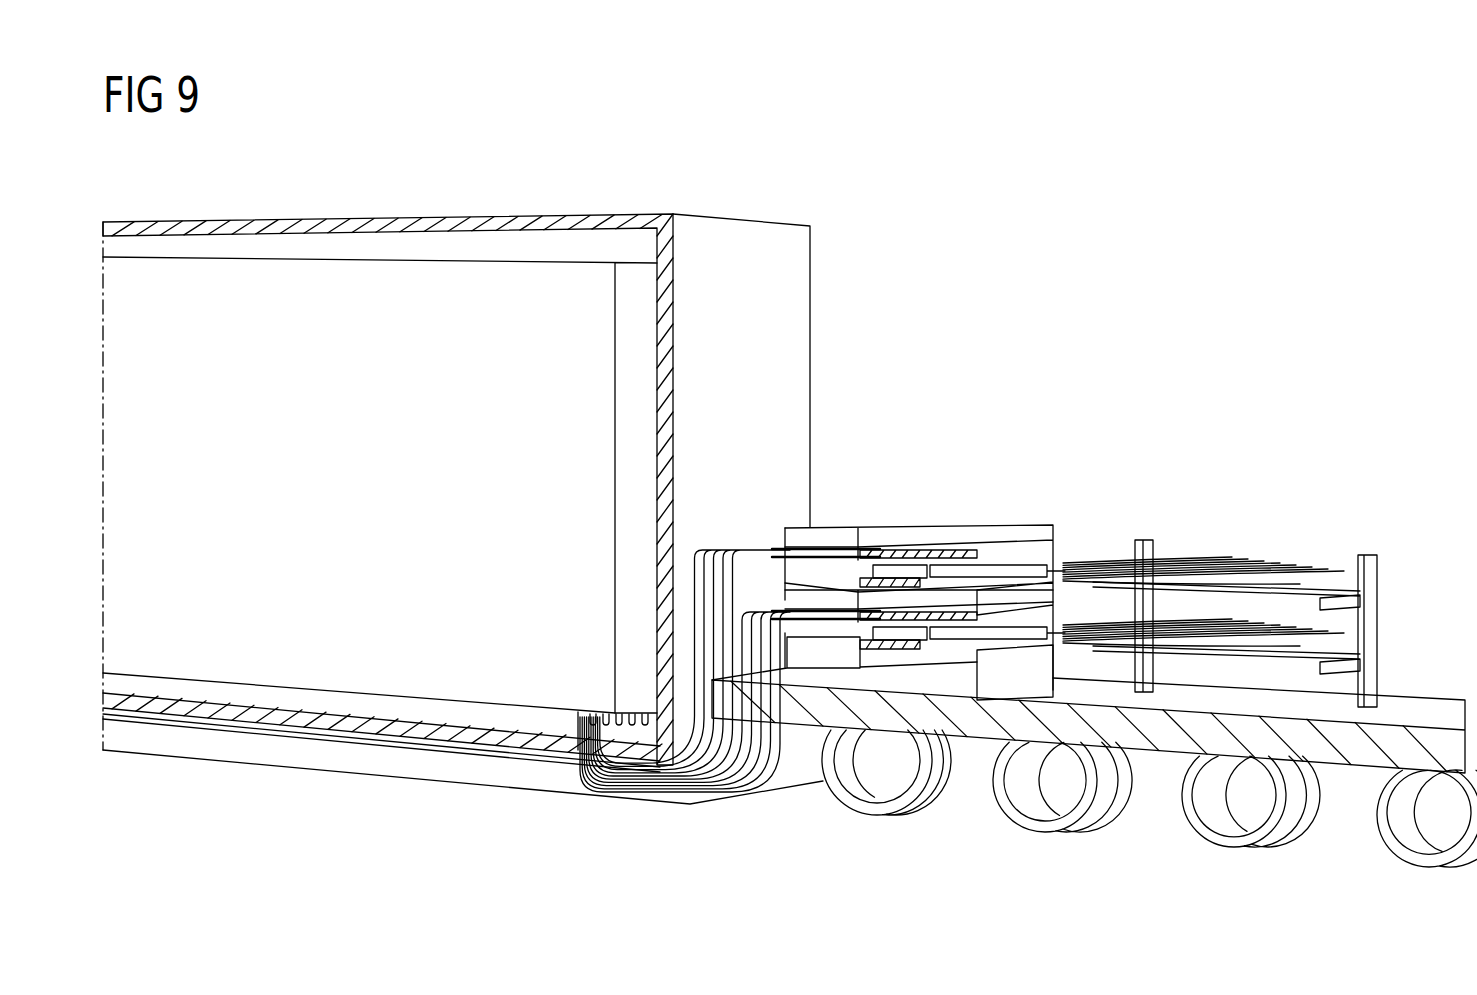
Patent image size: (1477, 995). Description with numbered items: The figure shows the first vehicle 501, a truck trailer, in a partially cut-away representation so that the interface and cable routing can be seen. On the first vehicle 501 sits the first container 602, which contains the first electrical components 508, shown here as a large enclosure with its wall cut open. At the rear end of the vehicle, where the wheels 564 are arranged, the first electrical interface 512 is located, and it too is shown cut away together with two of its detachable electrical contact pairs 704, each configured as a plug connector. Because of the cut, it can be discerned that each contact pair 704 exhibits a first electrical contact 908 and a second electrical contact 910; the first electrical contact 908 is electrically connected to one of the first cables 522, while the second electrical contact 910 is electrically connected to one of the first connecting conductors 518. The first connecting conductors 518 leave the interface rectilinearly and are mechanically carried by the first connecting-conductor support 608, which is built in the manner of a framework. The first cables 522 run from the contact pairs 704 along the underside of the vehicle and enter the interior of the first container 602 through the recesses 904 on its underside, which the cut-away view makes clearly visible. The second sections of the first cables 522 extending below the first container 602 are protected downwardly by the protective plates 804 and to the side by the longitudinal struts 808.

The first vehicle 501 is at (555, 171).
The first container 602 is at (283, 220).
The first electrical components 508 is at (418, 260).
The first electrical cable 522 is at (752, 550).
The detachable electrical contact pair 704 is at (970, 432).
The first electrical contact 908 is at (832, 535).
The second electrical contact 910 is at (922, 537).
The first electrical interface 512 is at (987, 527).
The first connecting conductors 518 is at (1212, 560).
The first connecting-conductor support 608 is at (1377, 623).
The wheels 564 is at (1038, 823).
The protective plates 804 is at (245, 768).
The longitudinal struts 808 is at (410, 747).
The recesses 904 is at (555, 762).